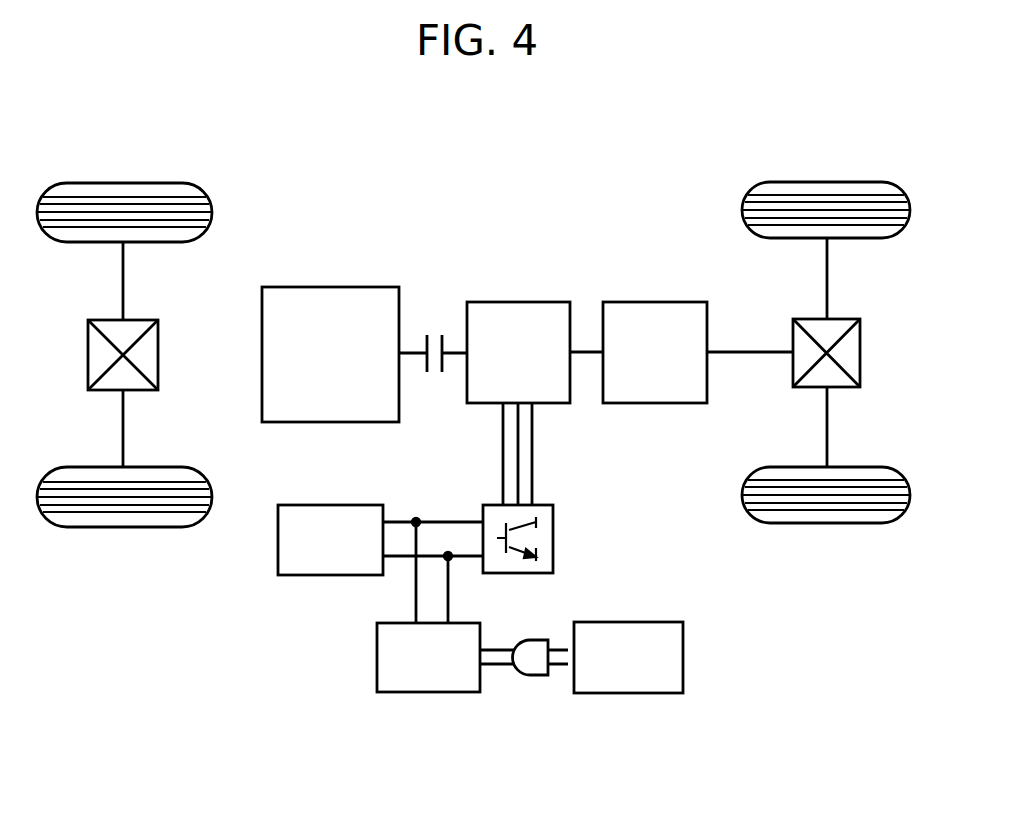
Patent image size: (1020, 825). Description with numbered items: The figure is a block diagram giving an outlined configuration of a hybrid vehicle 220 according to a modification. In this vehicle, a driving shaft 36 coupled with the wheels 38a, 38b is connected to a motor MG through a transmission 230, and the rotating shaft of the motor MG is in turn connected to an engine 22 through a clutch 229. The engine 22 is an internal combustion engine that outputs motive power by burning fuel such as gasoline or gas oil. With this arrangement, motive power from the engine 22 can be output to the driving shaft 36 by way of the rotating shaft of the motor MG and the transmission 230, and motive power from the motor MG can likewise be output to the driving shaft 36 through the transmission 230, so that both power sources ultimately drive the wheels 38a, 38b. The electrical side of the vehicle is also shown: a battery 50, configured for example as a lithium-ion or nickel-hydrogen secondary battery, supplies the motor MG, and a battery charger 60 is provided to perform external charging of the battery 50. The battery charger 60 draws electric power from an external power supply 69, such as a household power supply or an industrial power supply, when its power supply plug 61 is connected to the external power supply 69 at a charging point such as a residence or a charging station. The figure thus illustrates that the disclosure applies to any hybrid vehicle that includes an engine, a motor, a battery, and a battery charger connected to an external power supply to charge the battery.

The hybrid vehicle 220 is at (664, 167).
The engine 22 is at (330, 284).
The clutch 229 is at (435, 331).
The motor MG is at (520, 300).
The transmission 230 is at (656, 300).
The driving shaft 36 is at (742, 350).
The wheel 38a is at (827, 181).
The wheel 38b is at (826, 524).
The battery 50 is at (331, 503).
The battery charger 60 is at (433, 696).
The power supply plug 61 is at (534, 677).
The external power supply 69 is at (615, 697).